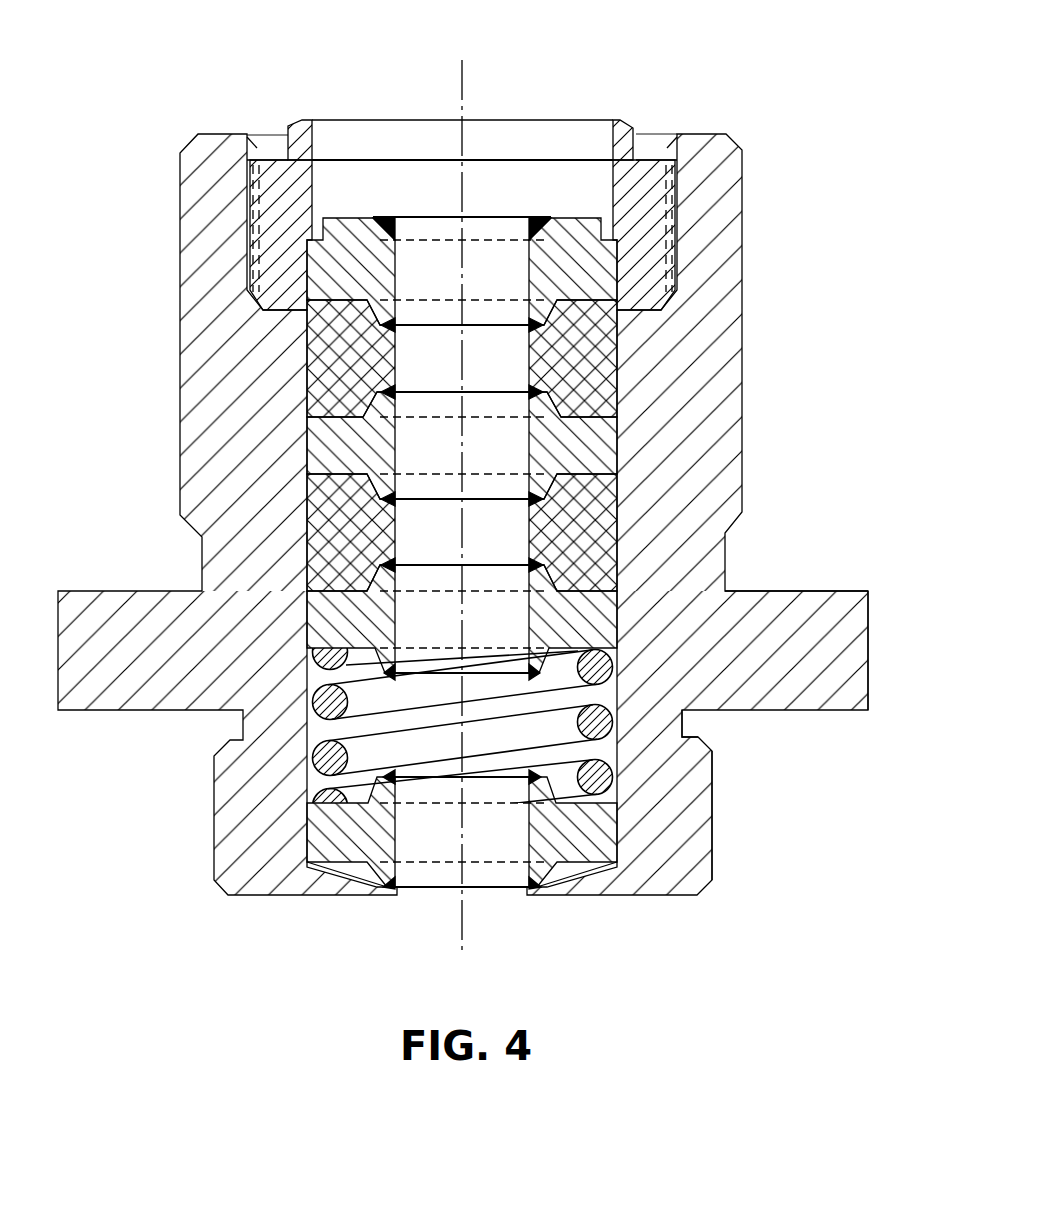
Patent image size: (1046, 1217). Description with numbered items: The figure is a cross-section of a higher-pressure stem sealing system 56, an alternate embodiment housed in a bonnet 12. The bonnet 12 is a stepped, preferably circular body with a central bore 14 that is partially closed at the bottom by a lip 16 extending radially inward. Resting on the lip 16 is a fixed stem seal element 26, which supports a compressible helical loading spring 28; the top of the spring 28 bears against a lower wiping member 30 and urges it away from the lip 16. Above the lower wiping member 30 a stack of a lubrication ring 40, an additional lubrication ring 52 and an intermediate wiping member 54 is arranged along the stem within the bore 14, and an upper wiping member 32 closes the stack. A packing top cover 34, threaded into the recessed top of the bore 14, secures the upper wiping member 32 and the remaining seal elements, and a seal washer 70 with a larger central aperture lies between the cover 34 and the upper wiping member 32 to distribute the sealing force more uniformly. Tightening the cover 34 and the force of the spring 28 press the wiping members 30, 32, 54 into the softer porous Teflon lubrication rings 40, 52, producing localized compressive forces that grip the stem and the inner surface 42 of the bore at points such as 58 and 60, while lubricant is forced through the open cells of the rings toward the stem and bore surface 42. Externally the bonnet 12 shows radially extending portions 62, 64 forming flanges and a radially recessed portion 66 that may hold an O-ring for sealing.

The higher-pressure stem sealing system 56 is at (479, 486).
The bonnet 12 is at (743, 193).
The packing top cover 34 is at (622, 128).
The upper wiping member 32 is at (393, 217).
The seal washer 70 is at (557, 217).
The sealing point 58 is at (403, 337).
The lubrication ring 40 is at (616, 340).
The intermediate wiping member 54 is at (616, 413).
The additional lubrication ring 52 is at (593, 510).
The lower wiping member 30 is at (600, 600).
The radially extending portion 62 is at (872, 605).
The radially recessed portion 66 is at (694, 725).
The central bore 14 is at (606, 748).
The radially extending portion 64 is at (713, 818).
The fixed stem seal element 26 is at (598, 850).
The lip 16 is at (558, 893).
The sealing point 60 is at (406, 876).
The loading spring 28 is at (320, 755).
The inner surface of the bore 42 is at (323, 782).